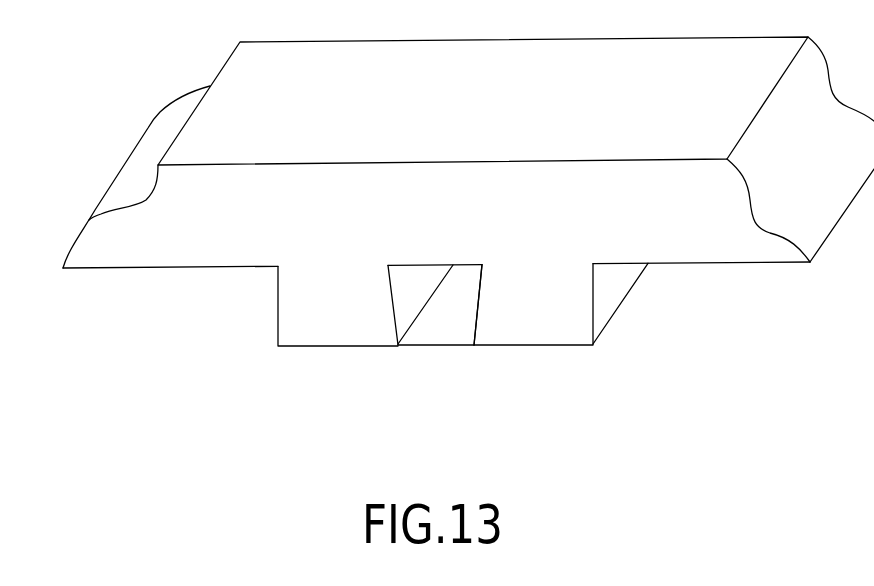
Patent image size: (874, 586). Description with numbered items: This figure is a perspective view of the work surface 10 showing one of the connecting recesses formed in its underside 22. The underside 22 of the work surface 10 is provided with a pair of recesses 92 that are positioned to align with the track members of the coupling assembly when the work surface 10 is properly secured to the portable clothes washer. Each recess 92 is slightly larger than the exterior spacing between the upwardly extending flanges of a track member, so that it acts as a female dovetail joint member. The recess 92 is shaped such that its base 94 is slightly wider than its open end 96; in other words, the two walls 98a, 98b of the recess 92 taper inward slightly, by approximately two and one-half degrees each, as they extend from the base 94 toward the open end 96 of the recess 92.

The work surface 10 is at (120, 256).
The underside 22 is at (278, 317).
The recess 92 is at (457, 273).
The base 94 is at (413, 265).
The open end 96 is at (444, 345).
The wall 98a is at (400, 318).
The wall 98b is at (473, 316).